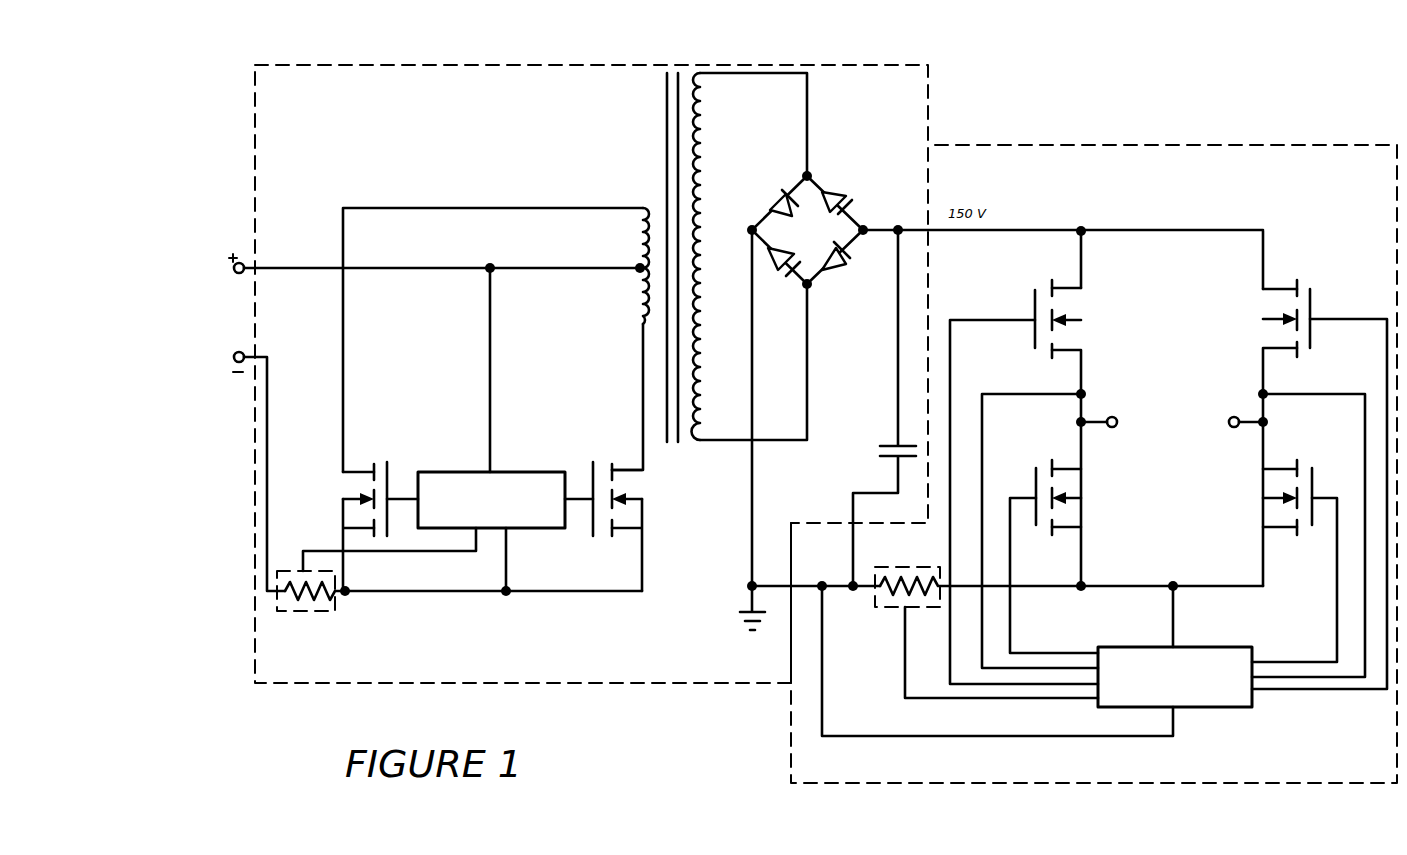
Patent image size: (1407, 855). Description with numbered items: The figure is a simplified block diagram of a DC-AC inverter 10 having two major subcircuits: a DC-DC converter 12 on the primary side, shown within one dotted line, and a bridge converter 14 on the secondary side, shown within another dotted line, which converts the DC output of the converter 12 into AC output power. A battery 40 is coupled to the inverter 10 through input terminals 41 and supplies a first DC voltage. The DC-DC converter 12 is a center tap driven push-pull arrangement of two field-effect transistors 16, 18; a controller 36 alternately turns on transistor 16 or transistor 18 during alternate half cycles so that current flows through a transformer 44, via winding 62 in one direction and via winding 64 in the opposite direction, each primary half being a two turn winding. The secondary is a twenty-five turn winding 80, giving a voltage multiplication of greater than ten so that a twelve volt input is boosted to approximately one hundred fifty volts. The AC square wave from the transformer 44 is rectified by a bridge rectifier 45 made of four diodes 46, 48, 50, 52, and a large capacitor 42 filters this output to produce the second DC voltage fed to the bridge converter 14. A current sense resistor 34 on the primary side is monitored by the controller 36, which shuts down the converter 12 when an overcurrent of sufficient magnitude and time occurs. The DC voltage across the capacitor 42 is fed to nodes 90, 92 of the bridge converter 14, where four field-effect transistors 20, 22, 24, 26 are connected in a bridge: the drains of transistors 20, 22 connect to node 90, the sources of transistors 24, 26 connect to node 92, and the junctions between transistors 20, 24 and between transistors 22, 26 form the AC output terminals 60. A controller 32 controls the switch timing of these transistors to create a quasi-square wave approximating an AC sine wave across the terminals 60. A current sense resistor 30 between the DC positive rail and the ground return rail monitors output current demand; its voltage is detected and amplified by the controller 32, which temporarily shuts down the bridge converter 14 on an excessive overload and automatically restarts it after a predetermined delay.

The DC-AC inverter 10 is at (484, 58).
The DC-DC converter 12 is at (520, 666).
The bridge converter 14 is at (1223, 761).
The field-effect transistor 16 is at (385, 468).
The field-effect transistor 18 is at (603, 468).
The field-effect transistor 20 is at (1078, 314).
The field-effect transistor 22 is at (1280, 314).
The field-effect transistor 24 is at (1078, 494).
The field-effect transistor 26 is at (1270, 494).
The current sense resistor 30 is at (905, 592).
The controller circuit 32 is at (1198, 646).
The current sense resistor 34 is at (300, 598).
The controller 36 is at (524, 530).
The battery 40 is at (210, 325).
The input terminals 41 is at (232, 268).
The capacitor 42 is at (884, 445).
The transformer 44 is at (667, 72).
The bridge rectifier 45 is at (796, 237).
The diode 46 is at (780, 204).
The diode 48 is at (784, 274).
The diode 50 is at (848, 200).
The diode 52 is at (834, 270).
The AC output terminals 60 is at (1116, 417).
The winding 62 is at (645, 208).
The winding 64 is at (640, 338).
The twenty-five turn winding 80 is at (693, 76).
The node 90 is at (1084, 230).
The node 92 is at (1177, 584).